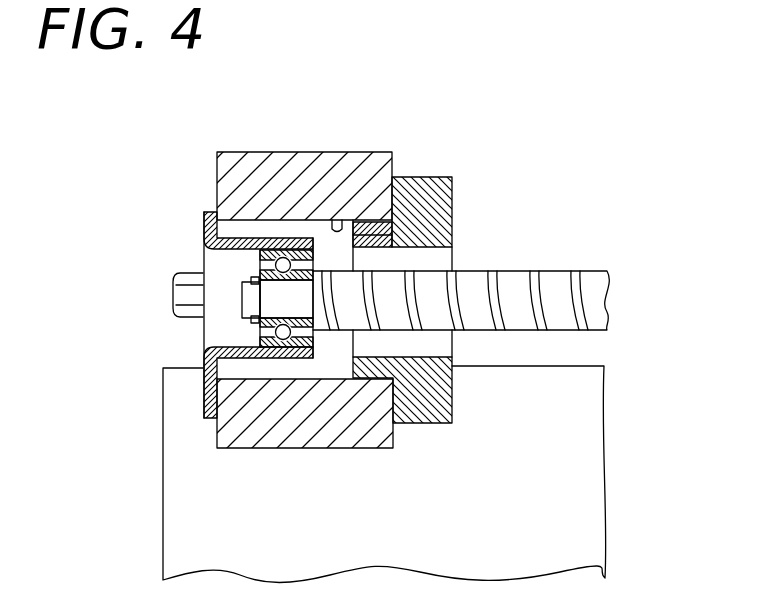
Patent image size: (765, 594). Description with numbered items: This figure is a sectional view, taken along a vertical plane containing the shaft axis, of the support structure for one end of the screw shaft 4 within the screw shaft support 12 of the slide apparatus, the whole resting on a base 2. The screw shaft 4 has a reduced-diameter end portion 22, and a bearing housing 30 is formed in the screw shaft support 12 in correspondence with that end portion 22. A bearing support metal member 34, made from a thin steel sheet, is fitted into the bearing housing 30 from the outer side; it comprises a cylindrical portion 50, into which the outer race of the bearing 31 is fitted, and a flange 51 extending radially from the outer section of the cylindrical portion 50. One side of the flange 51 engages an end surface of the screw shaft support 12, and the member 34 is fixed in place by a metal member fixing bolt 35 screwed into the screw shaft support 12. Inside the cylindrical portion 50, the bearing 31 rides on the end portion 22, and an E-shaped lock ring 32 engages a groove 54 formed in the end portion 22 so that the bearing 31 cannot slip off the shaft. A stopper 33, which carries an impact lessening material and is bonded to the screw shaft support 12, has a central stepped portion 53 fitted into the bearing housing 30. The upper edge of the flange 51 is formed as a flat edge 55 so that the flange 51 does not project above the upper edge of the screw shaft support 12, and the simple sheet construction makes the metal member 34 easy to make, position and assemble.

The base plate 2 is at (552, 403).
The screw shaft 4 is at (557, 278).
The screw shaft support 12 is at (332, 168).
The end portion 22 is at (277, 307).
The bearing housing 30 is at (336, 222).
The bearing 31 is at (268, 240).
The E-shaped lock ring 32 is at (255, 318).
The stopper 33 is at (430, 212).
The bearing support metal member 34 is at (203, 228).
The metal member fixing bolt 35 is at (175, 295).
The cylindrical portion 50 is at (281, 243).
The flange 51 is at (213, 393).
The stepped portion 53 is at (452, 237).
The groove 54 is at (257, 280).
The flat edge 55 is at (204, 214).